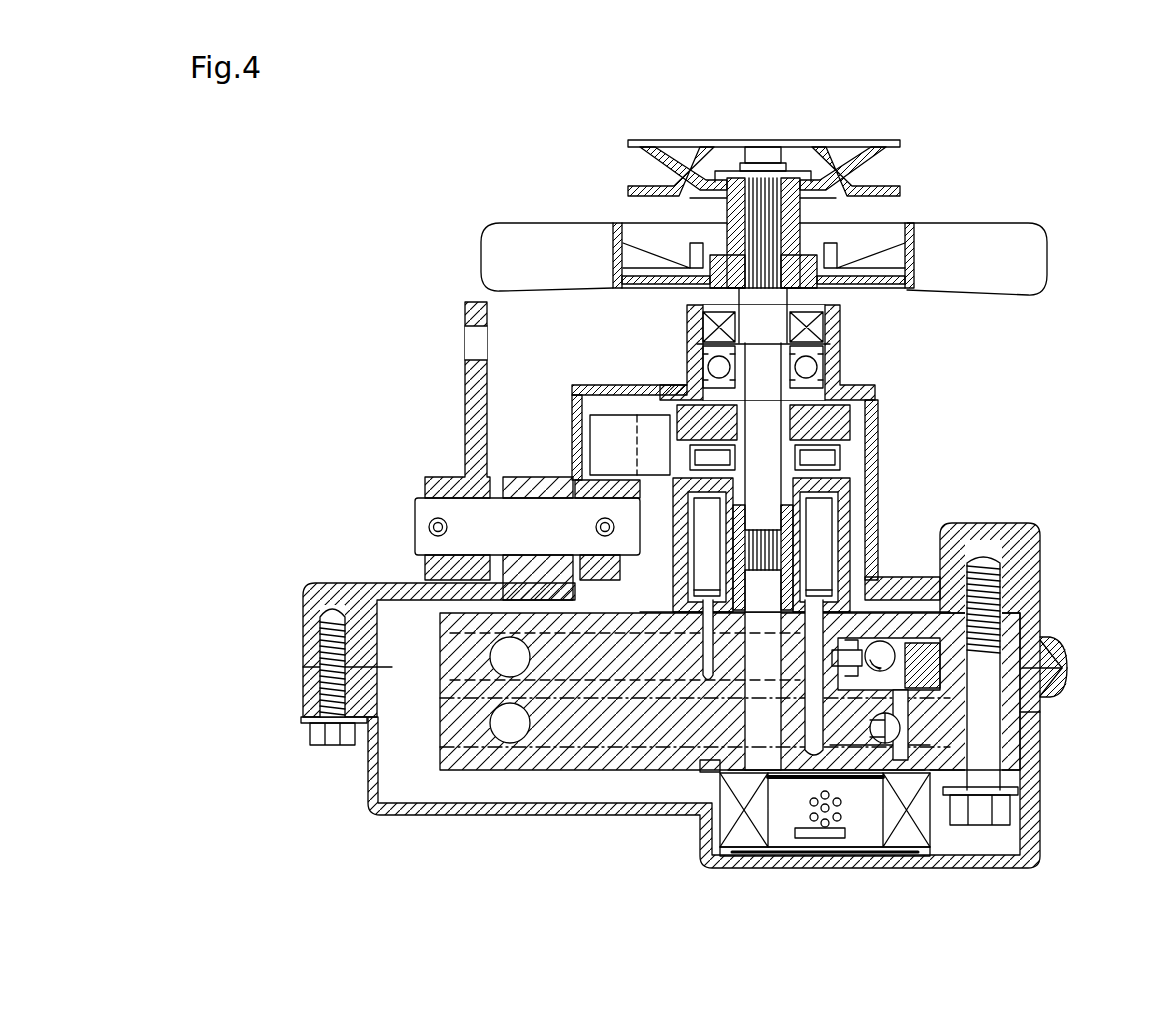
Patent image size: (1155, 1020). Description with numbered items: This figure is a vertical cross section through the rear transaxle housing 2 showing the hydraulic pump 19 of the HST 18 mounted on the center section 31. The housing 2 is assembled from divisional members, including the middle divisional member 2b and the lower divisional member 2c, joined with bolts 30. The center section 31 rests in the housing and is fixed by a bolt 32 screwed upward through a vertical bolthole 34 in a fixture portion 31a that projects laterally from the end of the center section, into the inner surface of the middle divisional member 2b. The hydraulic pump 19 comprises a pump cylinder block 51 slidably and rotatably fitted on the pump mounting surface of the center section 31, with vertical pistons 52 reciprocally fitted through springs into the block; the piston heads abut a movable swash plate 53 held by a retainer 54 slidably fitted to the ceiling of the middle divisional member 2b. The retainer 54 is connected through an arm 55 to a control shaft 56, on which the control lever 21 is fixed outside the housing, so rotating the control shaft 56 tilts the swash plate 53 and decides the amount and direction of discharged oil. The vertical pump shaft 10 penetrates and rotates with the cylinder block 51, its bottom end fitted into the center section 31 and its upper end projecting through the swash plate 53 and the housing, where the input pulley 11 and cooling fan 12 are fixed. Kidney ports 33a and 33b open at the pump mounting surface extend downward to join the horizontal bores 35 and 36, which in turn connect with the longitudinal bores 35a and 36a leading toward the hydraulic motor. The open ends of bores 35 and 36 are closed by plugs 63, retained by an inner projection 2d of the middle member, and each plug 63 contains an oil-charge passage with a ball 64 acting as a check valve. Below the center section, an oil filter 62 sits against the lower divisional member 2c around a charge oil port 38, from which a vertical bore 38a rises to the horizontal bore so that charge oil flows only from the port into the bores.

The rear transaxle housing 2 is at (718, 683).
The middle divisional member 2b is at (1068, 650).
The lower divisional member 2c is at (1068, 690).
The inner projection 2d is at (1032, 712).
The pump shaft 10 is at (773, 336).
The input pulley 11 is at (903, 144).
The cooling fan 12 is at (1048, 258).
The HST 18 is at (450, 790).
The hydraulic pump 19 is at (798, 460).
The control lever 21 is at (465, 312).
The bolt 30 is at (334, 748).
The center section 31 is at (701, 676).
The fixture portion 31a is at (975, 817).
The bolt 32 is at (1014, 811).
The kidney port 33a is at (712, 766).
The kidney port 33b is at (806, 778).
The bolthole 34 is at (910, 733).
The horizontal bore 35 is at (553, 683).
The horizontal bore 35a is at (492, 656).
The horizontal bore 36 is at (613, 690).
The horizontal bore 36a is at (492, 730).
The charge oil port 38 is at (920, 836).
The vertical bore 38a is at (876, 764).
The pump cylinder block 51 is at (673, 598).
The piston 52 is at (682, 497).
The movable swash plate 53 is at (848, 478).
The retainer 54 is at (868, 402).
The arm 55 is at (620, 471).
The control shaft 56 is at (535, 541).
The oil filter 62 is at (703, 822).
The plug 63 is at (922, 643).
The ball 64 is at (881, 640).